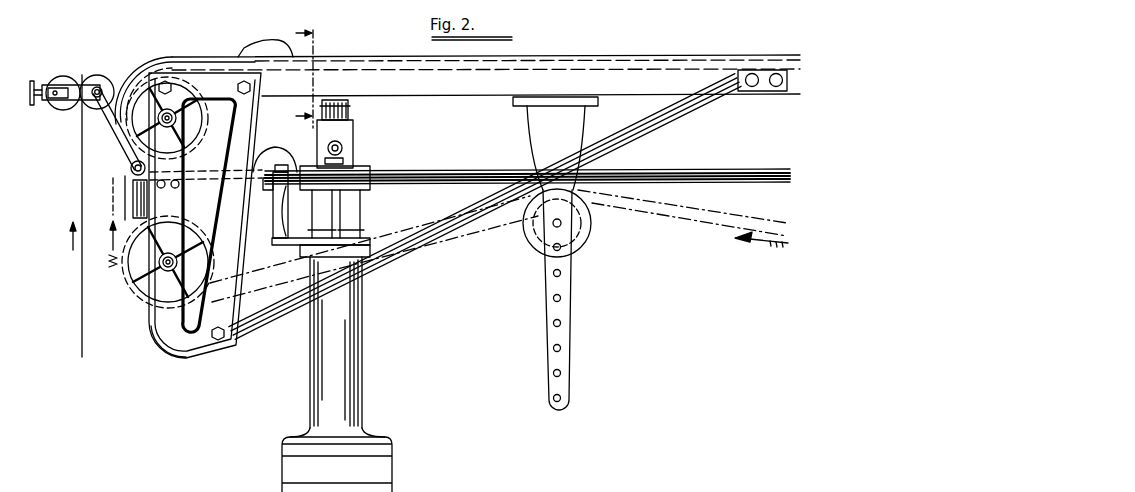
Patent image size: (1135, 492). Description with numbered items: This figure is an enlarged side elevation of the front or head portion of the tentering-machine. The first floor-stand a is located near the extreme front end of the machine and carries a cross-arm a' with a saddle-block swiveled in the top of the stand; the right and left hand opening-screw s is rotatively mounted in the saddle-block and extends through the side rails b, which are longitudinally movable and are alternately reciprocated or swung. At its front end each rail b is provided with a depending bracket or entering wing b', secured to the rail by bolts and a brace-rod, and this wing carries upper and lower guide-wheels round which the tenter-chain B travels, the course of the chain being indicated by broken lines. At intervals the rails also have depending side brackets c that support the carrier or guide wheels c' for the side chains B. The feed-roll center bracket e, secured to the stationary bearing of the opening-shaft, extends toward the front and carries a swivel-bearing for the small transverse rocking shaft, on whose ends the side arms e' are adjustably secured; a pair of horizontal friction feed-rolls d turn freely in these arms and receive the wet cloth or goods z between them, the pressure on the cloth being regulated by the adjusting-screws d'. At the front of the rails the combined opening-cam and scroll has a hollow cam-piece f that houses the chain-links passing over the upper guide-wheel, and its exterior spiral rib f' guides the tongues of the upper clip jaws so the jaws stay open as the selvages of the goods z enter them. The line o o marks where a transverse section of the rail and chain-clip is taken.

The floor-stand a is at (337, 374).
The cross-arm a' is at (327, 211).
The side rail b is at (486, 75).
The depending bracket or entering wing b' is at (159, 341).
The side chain B is at (588, 66).
The depending side bracket c is at (555, 253).
The carrier or guide wheel c' is at (569, 223).
The friction feed-roll d is at (76, 82).
The adjusting-screw d' is at (24, 82).
The feed-roll center bracket e is at (275, 148).
The side arm e' is at (75, 115).
The cam-piece f is at (197, 84).
The scroll-shaped rib member f' is at (216, 47).
The line o o is at (305, 73).
The opening-screw s is at (328, 148).
The wet cloth or goods z is at (82, 277).